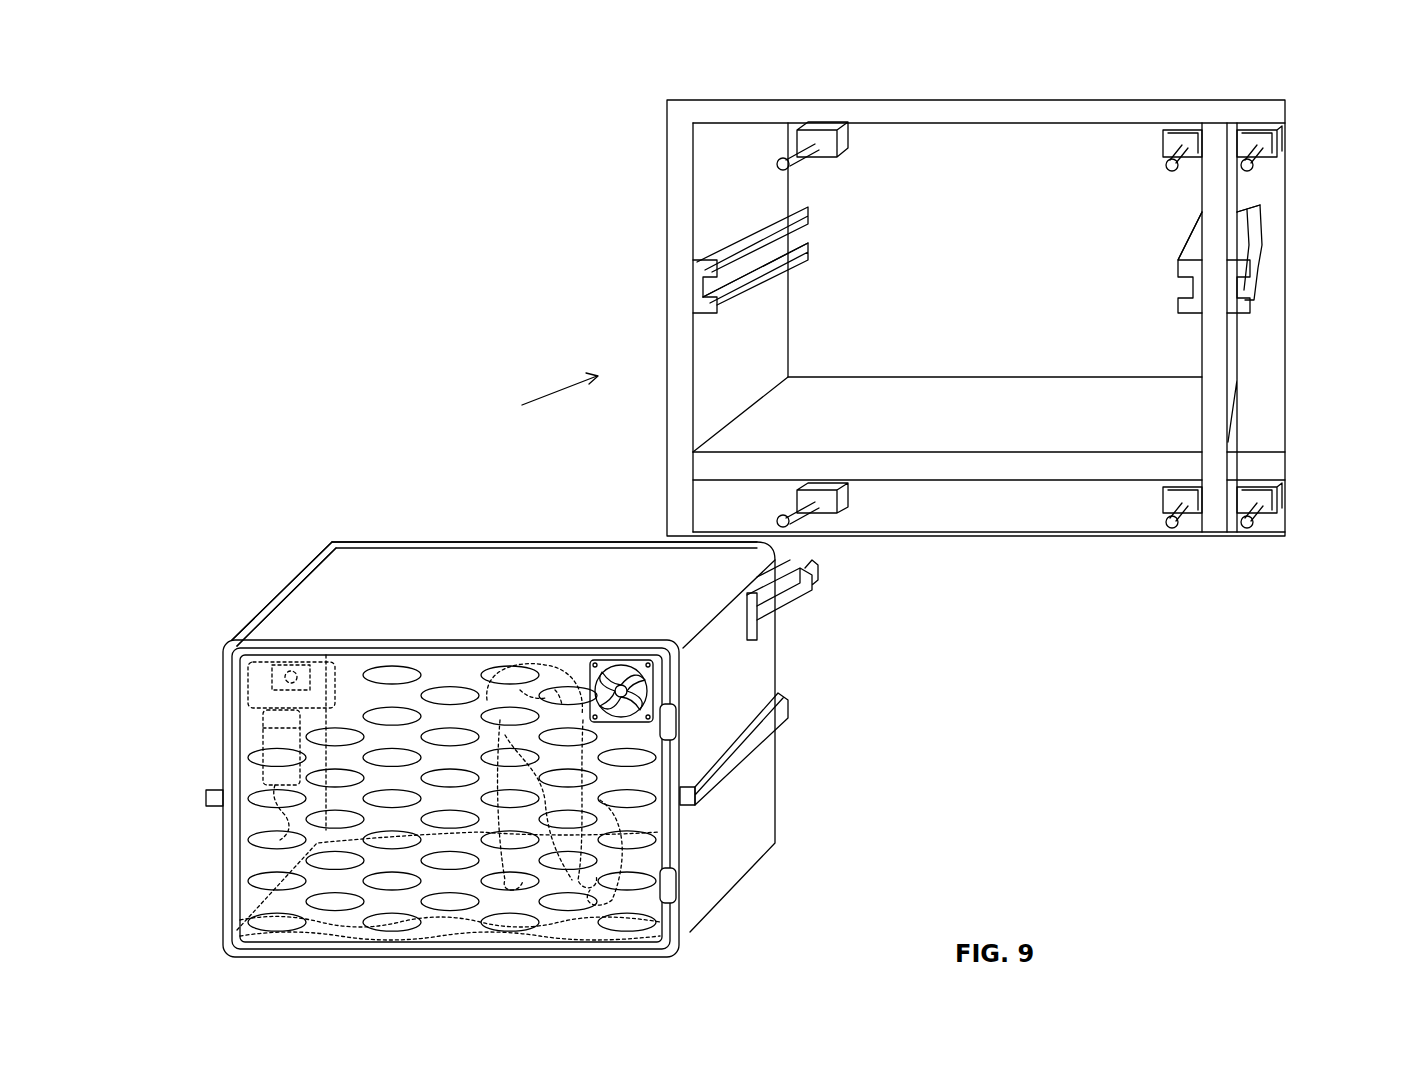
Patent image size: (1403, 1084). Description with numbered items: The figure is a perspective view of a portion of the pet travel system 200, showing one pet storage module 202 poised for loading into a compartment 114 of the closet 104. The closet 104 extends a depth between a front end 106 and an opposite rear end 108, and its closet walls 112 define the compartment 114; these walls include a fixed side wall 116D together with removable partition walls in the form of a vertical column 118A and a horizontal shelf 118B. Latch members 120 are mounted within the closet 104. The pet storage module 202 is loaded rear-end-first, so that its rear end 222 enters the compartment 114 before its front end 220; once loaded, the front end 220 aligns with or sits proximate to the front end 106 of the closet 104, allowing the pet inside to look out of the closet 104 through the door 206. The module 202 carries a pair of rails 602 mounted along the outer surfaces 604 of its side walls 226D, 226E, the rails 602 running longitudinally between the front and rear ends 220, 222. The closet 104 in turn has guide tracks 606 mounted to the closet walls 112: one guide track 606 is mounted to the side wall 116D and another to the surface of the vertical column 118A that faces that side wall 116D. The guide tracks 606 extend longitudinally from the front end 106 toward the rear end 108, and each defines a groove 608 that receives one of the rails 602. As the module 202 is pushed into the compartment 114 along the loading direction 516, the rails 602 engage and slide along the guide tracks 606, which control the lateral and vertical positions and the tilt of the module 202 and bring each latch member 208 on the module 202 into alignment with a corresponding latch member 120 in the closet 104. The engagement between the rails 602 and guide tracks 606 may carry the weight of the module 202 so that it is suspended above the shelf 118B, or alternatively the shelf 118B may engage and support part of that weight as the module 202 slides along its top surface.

The pet travel system 200 is at (372, 150).
The closet 104 is at (712, 97).
The front end 106 is at (695, 117).
The side wall 116D is at (716, 200).
The compartment 114 is at (962, 170).
The rear end 108 is at (1088, 378).
The horizontal shelf 118B is at (940, 465).
The vertical column 118A is at (1212, 182).
The closet wall 112 is at (1212, 148).
The latch member 120 is at (820, 130).
The guide track 606 is at (730, 262).
The groove 608 is at (745, 284).
The insertion direction 516 is at (543, 386).
The rear end 222 is at (487, 541).
The pet storage module 202 is at (288, 579).
The outer surface 604 is at (725, 865).
The front end 220 is at (220, 660).
The side wall 226D is at (222, 850).
The side wall 226E is at (690, 915).
The door 206 is at (348, 672).
The latch member 208 is at (790, 605).
The rail 602 is at (218, 797).